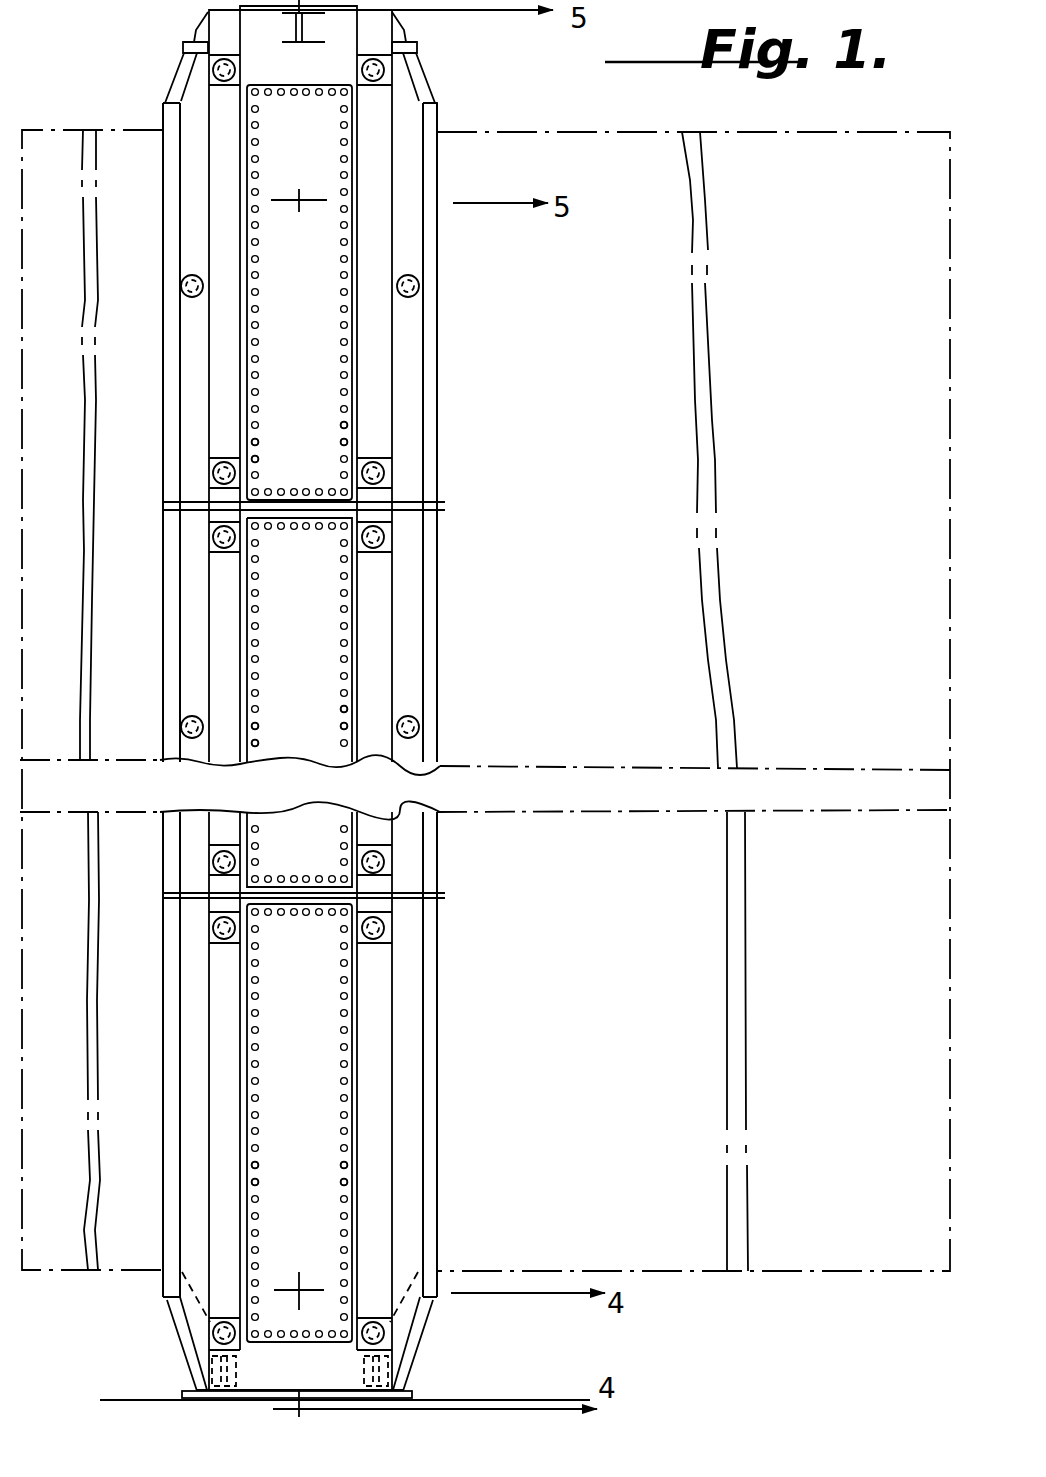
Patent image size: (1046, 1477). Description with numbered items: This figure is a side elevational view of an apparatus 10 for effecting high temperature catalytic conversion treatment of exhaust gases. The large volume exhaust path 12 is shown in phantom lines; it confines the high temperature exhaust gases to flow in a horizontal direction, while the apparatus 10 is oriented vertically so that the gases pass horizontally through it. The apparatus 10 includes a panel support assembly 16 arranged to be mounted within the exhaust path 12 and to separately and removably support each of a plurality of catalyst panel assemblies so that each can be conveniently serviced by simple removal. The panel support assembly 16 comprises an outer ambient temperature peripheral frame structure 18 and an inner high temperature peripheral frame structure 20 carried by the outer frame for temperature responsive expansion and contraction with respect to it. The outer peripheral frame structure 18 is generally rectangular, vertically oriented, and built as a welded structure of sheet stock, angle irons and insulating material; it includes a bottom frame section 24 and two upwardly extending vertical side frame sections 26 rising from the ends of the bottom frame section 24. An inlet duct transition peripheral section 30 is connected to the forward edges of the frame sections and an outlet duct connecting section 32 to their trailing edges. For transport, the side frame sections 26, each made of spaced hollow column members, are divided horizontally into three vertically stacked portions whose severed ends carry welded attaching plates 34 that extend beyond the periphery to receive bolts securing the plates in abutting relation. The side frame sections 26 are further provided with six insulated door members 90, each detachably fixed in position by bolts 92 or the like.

The apparatus 10 is at (176, 47).
The exhaust path 12 is at (82, 128).
The panel support assembly 16 is at (440, 108).
The outer ambient temperature peripheral frame structure 18 is at (172, 72).
The inner high temperature peripheral frame structure 20 is at (343, 27).
The bottom frame section 24 is at (265, 1368).
The side frame sections 26 is at (380, 418).
The inlet duct transition peripheral section 30 is at (172, 670).
The outlet duct connecting section 32 is at (440, 617).
The attaching plates 34 is at (445, 506).
The insulated door members 90 is at (330, 370).
The bolts 92 is at (342, 442).